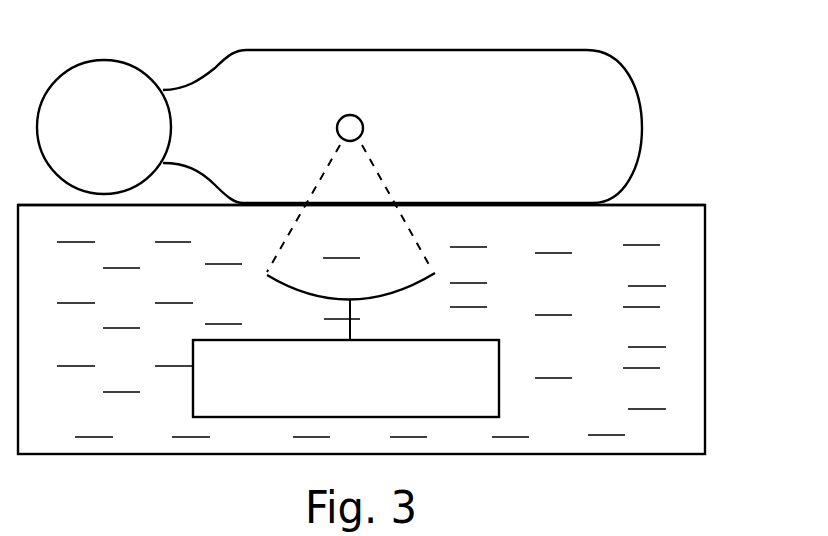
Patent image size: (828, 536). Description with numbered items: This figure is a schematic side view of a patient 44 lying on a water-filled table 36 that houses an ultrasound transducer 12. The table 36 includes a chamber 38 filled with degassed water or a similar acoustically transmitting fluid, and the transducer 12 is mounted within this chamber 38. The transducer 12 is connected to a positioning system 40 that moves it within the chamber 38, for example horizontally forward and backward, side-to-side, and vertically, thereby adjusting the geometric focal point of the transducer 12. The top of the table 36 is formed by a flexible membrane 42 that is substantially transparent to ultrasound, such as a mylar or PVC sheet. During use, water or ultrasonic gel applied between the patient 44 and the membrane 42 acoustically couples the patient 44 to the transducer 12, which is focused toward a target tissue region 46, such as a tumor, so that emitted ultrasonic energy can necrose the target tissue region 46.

The transducer 12 is at (280, 282).
The table 36 is at (722, 345).
The chamber 38 is at (71, 288).
The positioning system 40 is at (457, 417).
The flexible membrane 42 is at (662, 204).
The patient 44 is at (265, 67).
The target tissue region 46 is at (363, 126).